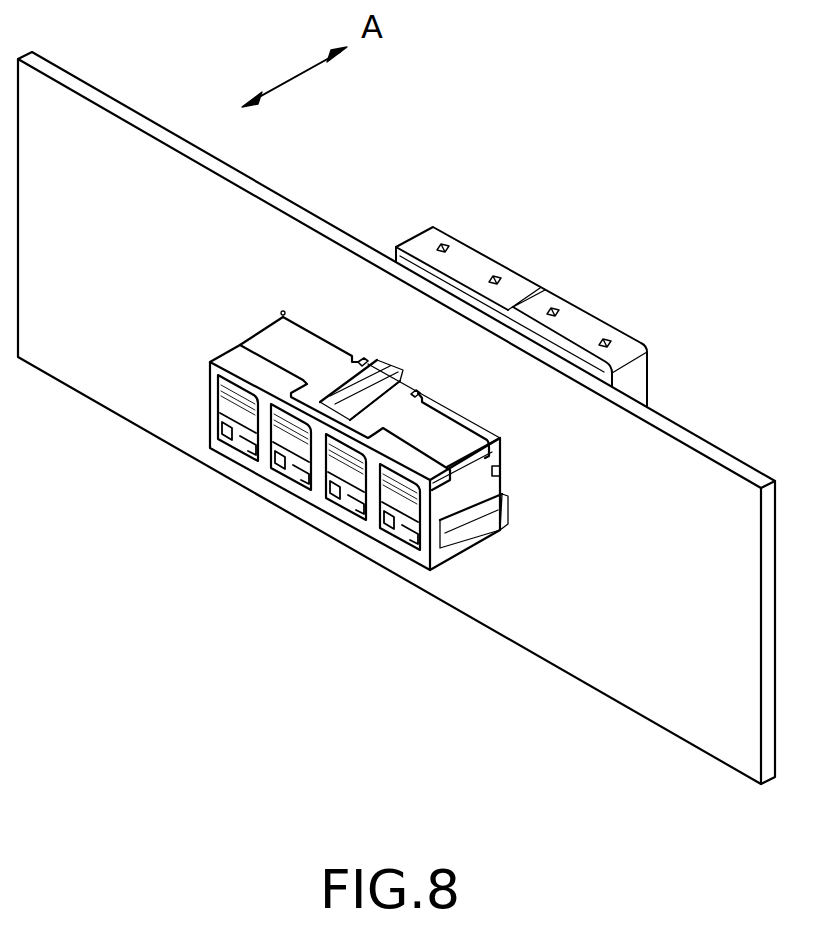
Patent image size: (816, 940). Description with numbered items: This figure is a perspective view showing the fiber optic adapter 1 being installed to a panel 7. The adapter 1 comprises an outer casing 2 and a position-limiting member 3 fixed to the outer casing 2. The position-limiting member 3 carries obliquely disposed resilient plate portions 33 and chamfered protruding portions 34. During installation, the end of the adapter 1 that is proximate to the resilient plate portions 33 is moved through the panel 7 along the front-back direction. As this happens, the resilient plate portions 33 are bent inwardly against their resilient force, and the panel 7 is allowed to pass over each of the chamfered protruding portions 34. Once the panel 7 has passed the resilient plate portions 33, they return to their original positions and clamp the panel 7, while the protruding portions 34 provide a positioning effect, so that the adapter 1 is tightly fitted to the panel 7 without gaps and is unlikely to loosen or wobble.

The fiber optic adapter 1 is at (566, 262).
The outer casing 2 is at (377, 467).
The position-limiting member 3 is at (246, 329).
The panel 7 is at (606, 677).
The resilient plate portions 33 is at (385, 368).
The protruding portions 34 is at (362, 362).